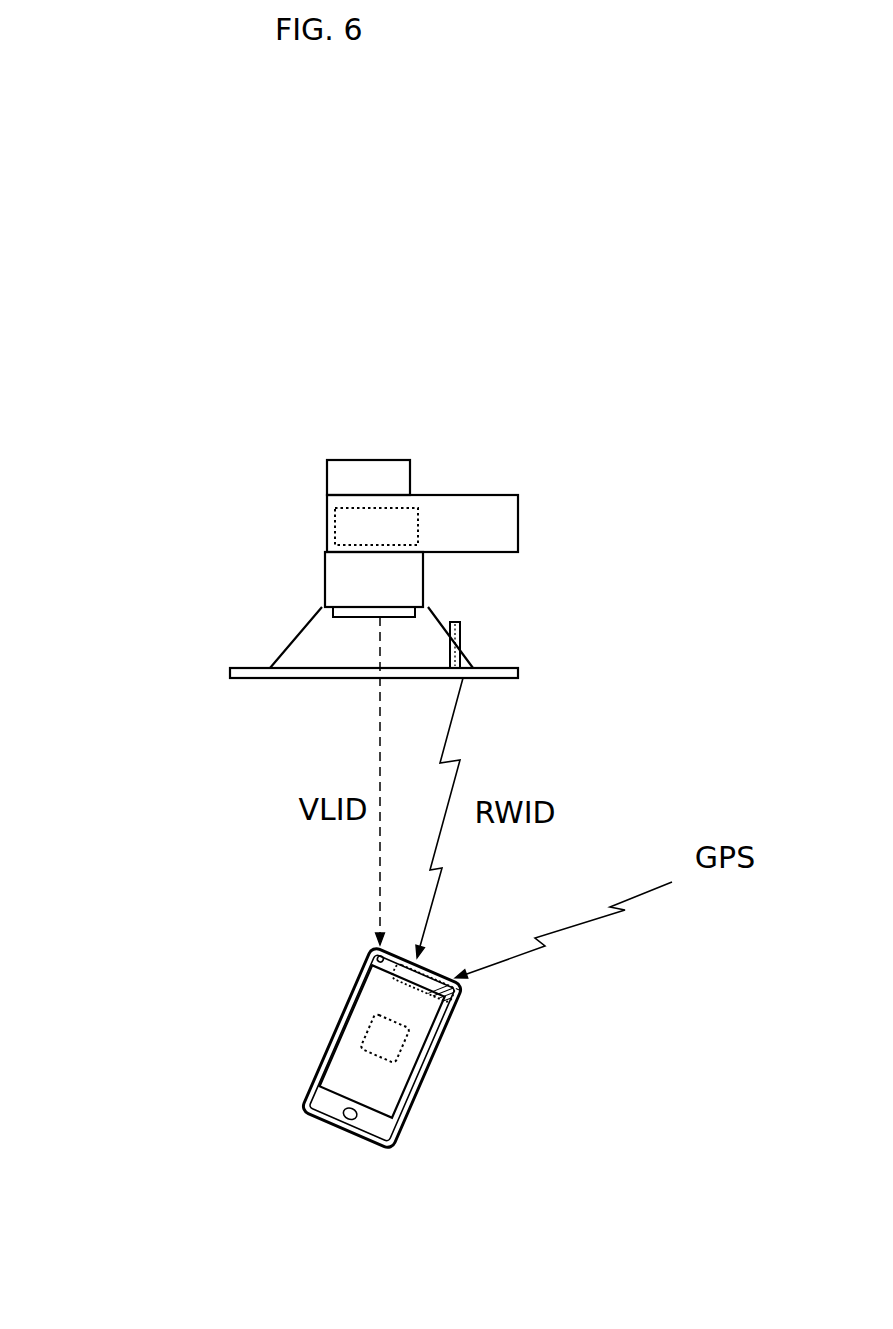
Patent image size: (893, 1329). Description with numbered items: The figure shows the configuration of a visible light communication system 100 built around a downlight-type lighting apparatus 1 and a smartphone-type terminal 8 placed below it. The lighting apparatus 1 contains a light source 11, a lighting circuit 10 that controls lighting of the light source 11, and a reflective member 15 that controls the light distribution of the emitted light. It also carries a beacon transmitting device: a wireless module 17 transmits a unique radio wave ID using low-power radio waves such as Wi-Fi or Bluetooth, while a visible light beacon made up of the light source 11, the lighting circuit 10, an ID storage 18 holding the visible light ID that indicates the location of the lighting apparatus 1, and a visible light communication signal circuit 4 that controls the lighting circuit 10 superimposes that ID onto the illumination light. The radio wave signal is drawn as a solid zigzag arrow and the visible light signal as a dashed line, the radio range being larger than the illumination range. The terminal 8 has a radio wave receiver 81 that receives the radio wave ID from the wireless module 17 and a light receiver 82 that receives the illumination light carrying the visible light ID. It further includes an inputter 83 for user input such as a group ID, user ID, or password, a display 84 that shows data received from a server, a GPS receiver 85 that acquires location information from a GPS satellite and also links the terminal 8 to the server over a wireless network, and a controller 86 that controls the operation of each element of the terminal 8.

The visible light communication system 100 is at (63, 512).
The lighting apparatus 1 is at (300, 595).
The visible light communication signal circuit 4 is at (398, 462).
The lighting circuit 10 is at (485, 510).
The ID storage 18 is at (335, 520).
The light source 11 is at (365, 617).
The reflective member 15 is at (300, 647).
The wireless module 17 is at (460, 633).
The terminal 8 is at (305, 1031).
The radio wave receiver 81 is at (413, 973).
The light receiver 82 is at (370, 962).
The inputter 83 is at (343, 1113).
The display 84 is at (340, 1073).
The GPS receiver 85 is at (467, 985).
The controller 86 is at (393, 1043).